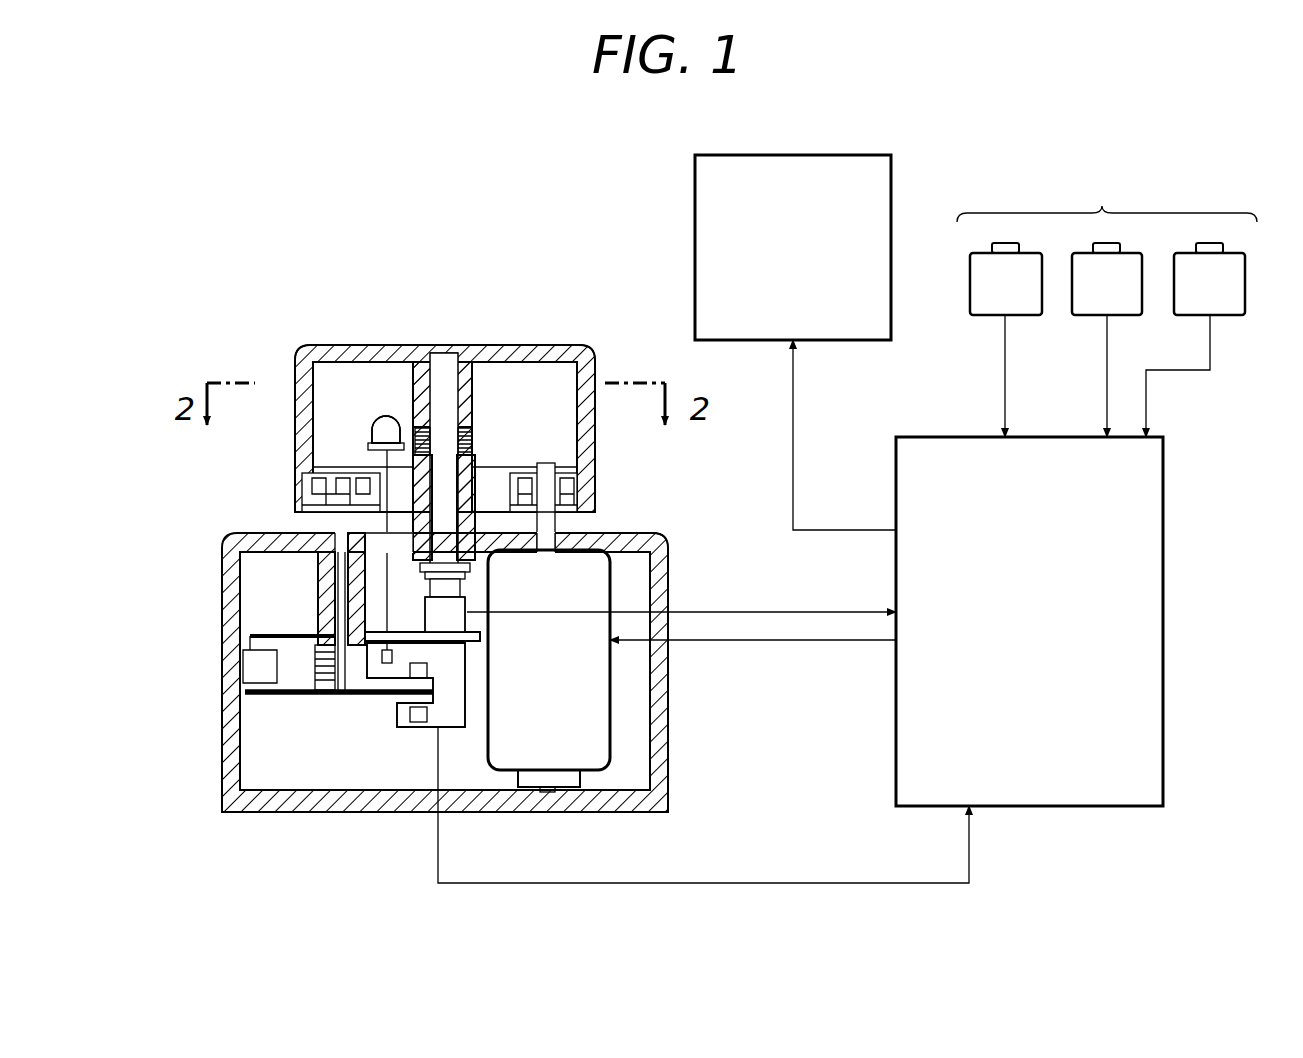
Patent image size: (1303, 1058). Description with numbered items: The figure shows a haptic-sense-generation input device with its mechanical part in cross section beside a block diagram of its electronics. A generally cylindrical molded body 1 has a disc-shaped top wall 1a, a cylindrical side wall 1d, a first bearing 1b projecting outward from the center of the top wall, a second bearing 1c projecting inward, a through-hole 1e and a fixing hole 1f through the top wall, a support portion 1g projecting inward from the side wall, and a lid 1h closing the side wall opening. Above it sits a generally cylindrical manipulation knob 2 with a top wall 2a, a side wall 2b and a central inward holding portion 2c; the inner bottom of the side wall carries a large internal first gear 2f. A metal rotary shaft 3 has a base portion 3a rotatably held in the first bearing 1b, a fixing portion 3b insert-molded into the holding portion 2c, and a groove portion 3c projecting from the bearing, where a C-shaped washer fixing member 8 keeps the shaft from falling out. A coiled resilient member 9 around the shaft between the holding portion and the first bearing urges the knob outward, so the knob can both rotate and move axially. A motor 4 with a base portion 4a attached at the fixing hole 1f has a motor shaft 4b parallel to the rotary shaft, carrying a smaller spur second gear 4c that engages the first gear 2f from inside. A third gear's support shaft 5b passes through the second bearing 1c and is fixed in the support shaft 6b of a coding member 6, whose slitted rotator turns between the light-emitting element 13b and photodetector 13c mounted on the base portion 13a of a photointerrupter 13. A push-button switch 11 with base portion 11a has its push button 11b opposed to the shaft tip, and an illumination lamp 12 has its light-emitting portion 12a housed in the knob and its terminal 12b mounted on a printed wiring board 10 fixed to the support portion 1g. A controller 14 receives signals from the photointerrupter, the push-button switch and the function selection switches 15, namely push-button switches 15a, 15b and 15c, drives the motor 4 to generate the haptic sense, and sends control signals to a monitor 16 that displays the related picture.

The body 1 is at (215, 578).
The top wall 1a is at (660, 542).
The first bearing 1b is at (476, 470).
The second bearing 1c is at (318, 592).
The side wall 1d is at (228, 735).
The through-hole 1e is at (360, 540).
The fixing hole 1f is at (586, 536).
The support portion 1g is at (245, 650).
The lid 1h is at (505, 812).
The manipulation knob 2 is at (381, 345).
The top wall 2a is at (556, 347).
The side wall 2b is at (295, 372).
The holding portion 2c is at (438, 355).
The first gear 2f is at (300, 485).
The rotary shaft 3 is at (483, 365).
The base portion 3a is at (470, 432).
The fixing portion 3b is at (452, 372).
The groove portion 3c is at (468, 567).
The motor 4 is at (612, 715).
The base portion 4a is at (585, 777).
The motor shaft 4b is at (586, 500).
The second gear 4c is at (560, 470).
The support shaft 5b is at (341, 700).
The coding member 6 is at (288, 696).
The support shaft 6b is at (318, 696).
The fixing member 8 is at (428, 584).
The resilient member 9 is at (418, 428).
The printed wiring board 10 is at (272, 690).
The push-button switch 11 is at (466, 618).
The base portion 11a is at (445, 614).
The push button 11b is at (462, 590).
The illumination lamp 12 is at (373, 415).
The light-emitting portion 12a is at (386, 429).
The terminal 12b is at (322, 536).
The photointerrupter 13 is at (466, 712).
The base portion 13a is at (416, 685).
The light-emitting element 13b is at (410, 690).
The photodetector 13c is at (416, 728).
The controller 14 is at (1165, 540).
The function selection switches 15 is at (1106, 310).
The push-button switch 15a is at (980, 318).
The push-button switch 15b is at (1082, 318).
The push-button switch 15c is at (1238, 318).
The monitor 16 is at (870, 152).